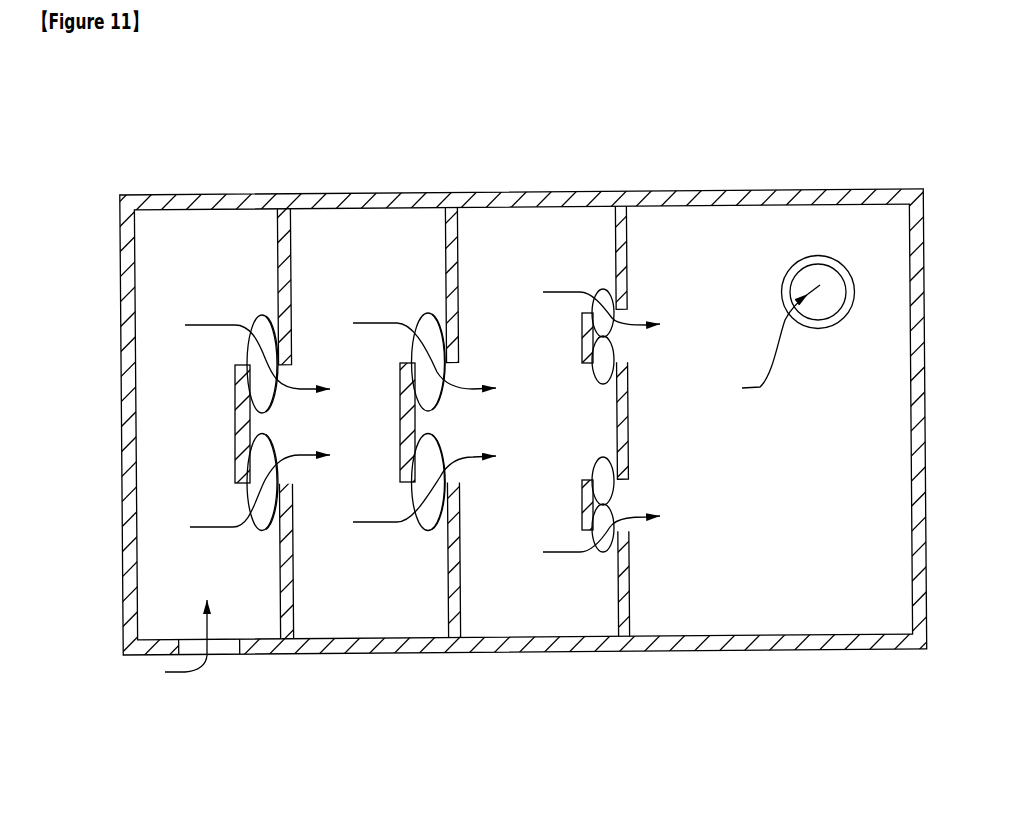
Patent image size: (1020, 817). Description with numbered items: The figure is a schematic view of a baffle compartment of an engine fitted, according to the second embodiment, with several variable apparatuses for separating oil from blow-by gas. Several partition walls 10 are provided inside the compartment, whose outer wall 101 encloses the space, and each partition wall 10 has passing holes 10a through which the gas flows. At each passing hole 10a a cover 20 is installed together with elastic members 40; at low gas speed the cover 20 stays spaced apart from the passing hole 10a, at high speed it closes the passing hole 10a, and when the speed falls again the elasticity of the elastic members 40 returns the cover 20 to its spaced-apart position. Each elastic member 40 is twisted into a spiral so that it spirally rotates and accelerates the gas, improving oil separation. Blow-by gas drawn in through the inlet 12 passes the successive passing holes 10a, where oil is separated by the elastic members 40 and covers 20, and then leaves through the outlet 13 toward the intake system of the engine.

The partition wall 10 is at (291, 243).
The passing hole 10a is at (283, 428).
The housing wall 101 is at (192, 197).
The inlet 12 is at (222, 652).
The outlet 13 is at (832, 293).
The cover 20 is at (233, 412).
The elastic member 40 is at (250, 323).